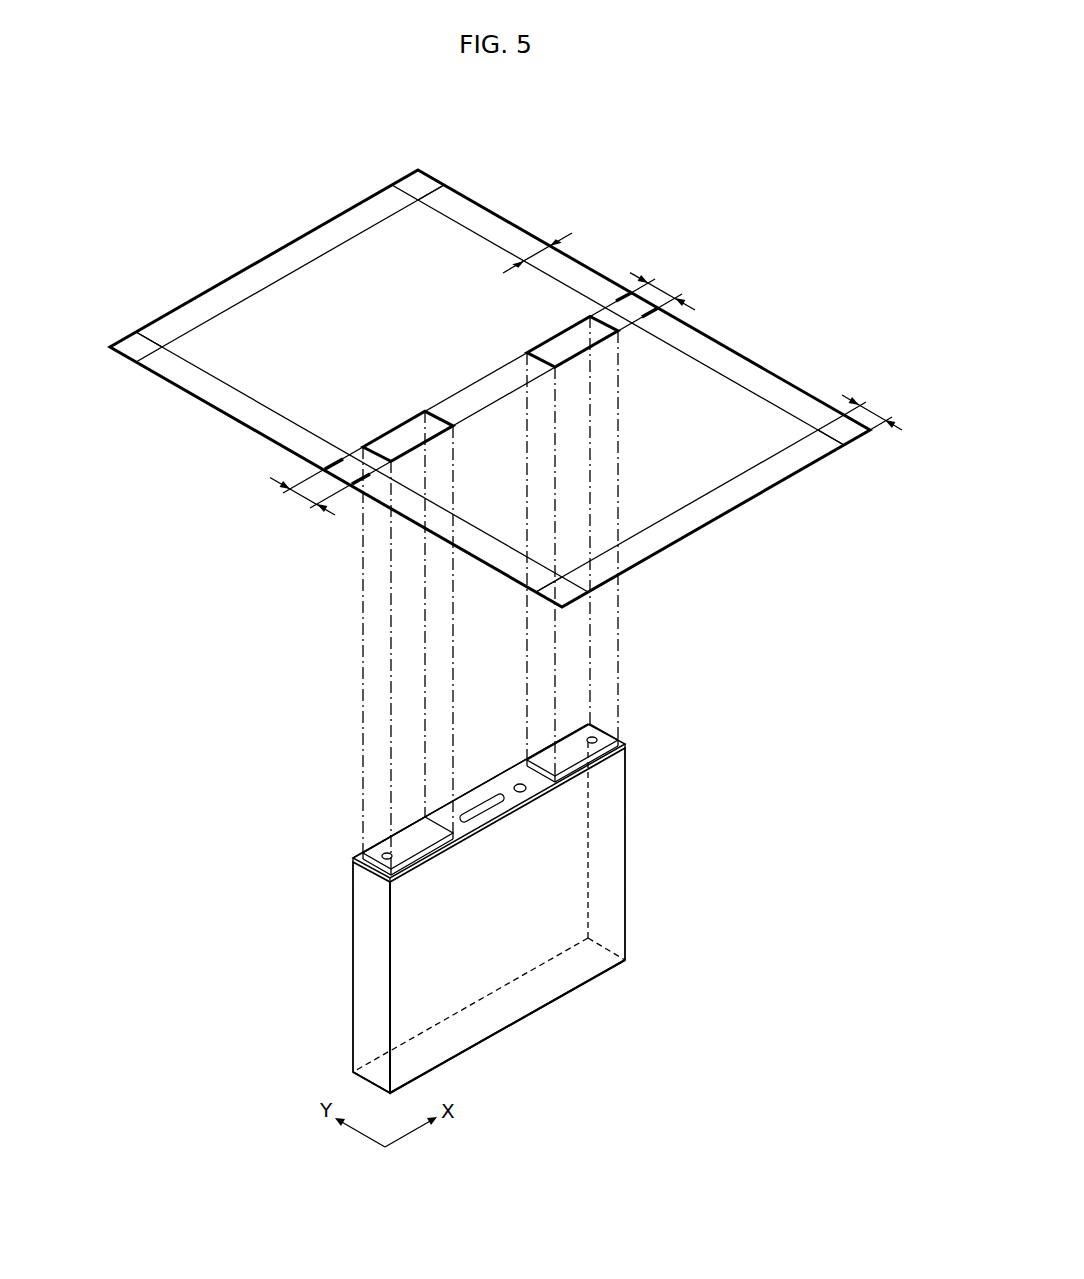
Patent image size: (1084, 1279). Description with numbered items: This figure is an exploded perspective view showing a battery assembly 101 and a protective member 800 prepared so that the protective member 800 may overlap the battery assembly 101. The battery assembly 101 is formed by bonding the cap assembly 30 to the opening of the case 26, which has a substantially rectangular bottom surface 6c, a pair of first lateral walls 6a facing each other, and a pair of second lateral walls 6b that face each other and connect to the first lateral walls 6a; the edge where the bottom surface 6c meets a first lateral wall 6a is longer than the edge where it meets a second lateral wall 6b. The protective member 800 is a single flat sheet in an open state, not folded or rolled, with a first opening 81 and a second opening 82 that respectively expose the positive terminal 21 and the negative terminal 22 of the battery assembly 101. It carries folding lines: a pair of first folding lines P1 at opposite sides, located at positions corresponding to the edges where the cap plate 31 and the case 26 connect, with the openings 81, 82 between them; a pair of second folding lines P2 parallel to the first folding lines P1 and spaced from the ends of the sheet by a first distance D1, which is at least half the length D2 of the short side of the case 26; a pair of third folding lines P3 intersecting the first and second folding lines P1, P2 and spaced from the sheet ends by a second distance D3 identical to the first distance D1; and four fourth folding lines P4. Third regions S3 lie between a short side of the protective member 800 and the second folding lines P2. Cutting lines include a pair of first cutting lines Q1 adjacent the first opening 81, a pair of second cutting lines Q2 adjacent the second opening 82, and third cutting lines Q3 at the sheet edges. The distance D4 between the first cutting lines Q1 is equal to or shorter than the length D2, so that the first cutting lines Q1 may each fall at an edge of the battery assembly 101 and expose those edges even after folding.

The protective member 800 is at (525, 188).
The first opening 81 is at (398, 441).
The second opening 82 is at (548, 351).
The first folding lines P1 is at (512, 398).
The second folding lines P2 is at (700, 497).
The third folding lines P3 is at (232, 387).
The fourth folding lines P4 is at (416, 198).
The first cutting lines Q1 is at (358, 472).
The second cutting lines Q2 is at (622, 304).
The third cutting lines Q3 is at (428, 180).
The third regions S3 is at (142, 356).
The first distance D1 is at (872, 411).
The length of short side of case D2 is at (662, 289).
The second distance D3 is at (537, 253).
The distance between first cutting lines D4 is at (307, 496).
The battery assembly 101 is at (512, 908).
The positive terminal 21 is at (372, 856).
The negative terminal 22 is at (592, 759).
The cap assembly 30 is at (520, 816).
The cap plate 31 is at (490, 789).
The case 26 is at (446, 917).
The first lateral walls 6a is at (405, 1005).
The second lateral walls 6b is at (357, 1043).
The bottom surface 6c is at (300, 997).